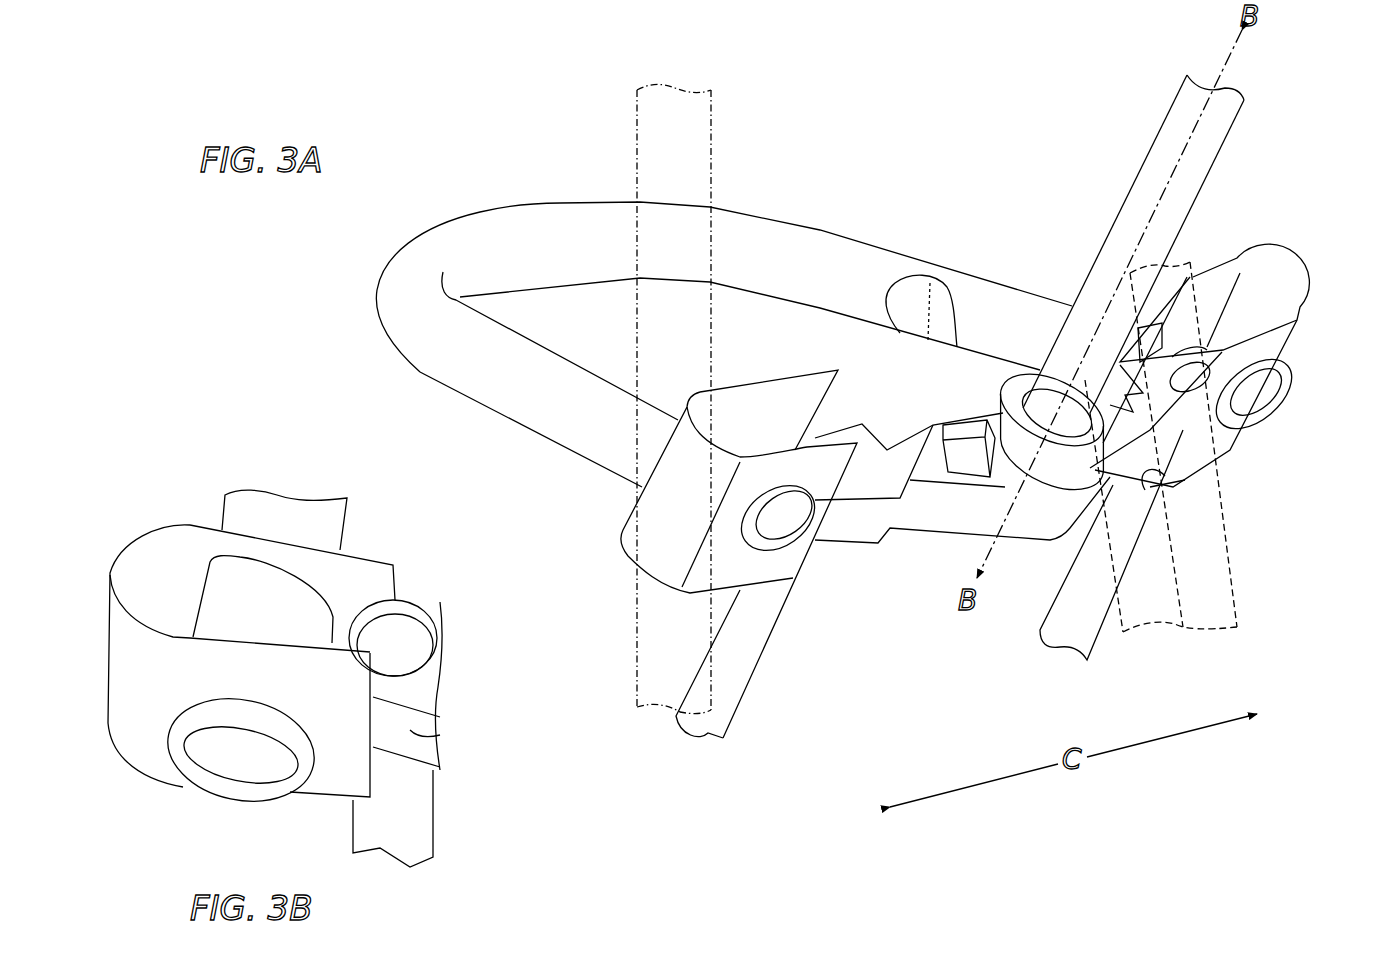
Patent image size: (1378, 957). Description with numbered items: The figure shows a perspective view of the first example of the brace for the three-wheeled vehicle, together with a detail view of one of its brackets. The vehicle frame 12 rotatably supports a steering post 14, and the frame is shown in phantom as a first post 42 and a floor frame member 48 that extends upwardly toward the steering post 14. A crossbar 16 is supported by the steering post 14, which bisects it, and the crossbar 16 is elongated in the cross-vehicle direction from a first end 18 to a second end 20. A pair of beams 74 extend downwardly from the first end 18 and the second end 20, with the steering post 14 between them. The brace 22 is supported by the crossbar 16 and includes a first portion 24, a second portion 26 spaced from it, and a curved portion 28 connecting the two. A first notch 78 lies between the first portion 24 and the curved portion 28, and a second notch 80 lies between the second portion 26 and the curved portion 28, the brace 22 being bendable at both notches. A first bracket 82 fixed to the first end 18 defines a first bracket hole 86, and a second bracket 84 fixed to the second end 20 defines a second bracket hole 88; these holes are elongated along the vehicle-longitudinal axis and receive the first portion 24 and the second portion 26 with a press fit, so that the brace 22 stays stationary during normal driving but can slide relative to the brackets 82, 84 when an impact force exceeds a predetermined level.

In FIG. 3A, the vehicle frame 12 is at (717, 150).
In FIG. 3A, the steering post 14 is at (1233, 157).
In FIG. 3A, the crossbar 16 is at (915, 542).
In FIG. 3B, the crossbar 16 is at (440, 737).
In FIG. 3A, the first end 18 is at (853, 557).
In FIG. 3B, the first end 18 is at (415, 580).
In FIG. 3A, the second end 20 is at (1150, 480).
In FIG. 3A, the brace 22 is at (853, 232).
In FIG. 3B, the brace 22 is at (213, 516).
In FIG. 3A, the first portion 24 is at (565, 432).
In FIG. 3B, the first portion 24 is at (327, 530).
In FIG. 3A, the second portion 26 is at (1012, 305).
In FIG. 3A, the curved portion 28 is at (545, 223).
In FIG. 3A, the first post 42 is at (655, 130).
In FIG. 3A, the floor frame member 48 is at (1225, 600).
In FIG. 3A, the beams 74 is at (742, 668).
In FIG. 3B, the beams 74 is at (415, 822).
In FIG. 3A, the first notch 78 is at (566, 365).
In FIG. 3A, the second notch 80 is at (930, 307).
In FIG. 3A, the first bracket 82 is at (765, 395).
In FIG. 3B, the first bracket 82 is at (150, 568).
In FIG. 3A, the second bracket 84 is at (1270, 350).
In FIG. 3A, the first bracket hole 86 is at (795, 545).
In FIG. 3B, the first bracket hole 86 is at (205, 778).
In FIG. 3A, the second bracket hole 88 is at (1268, 412).